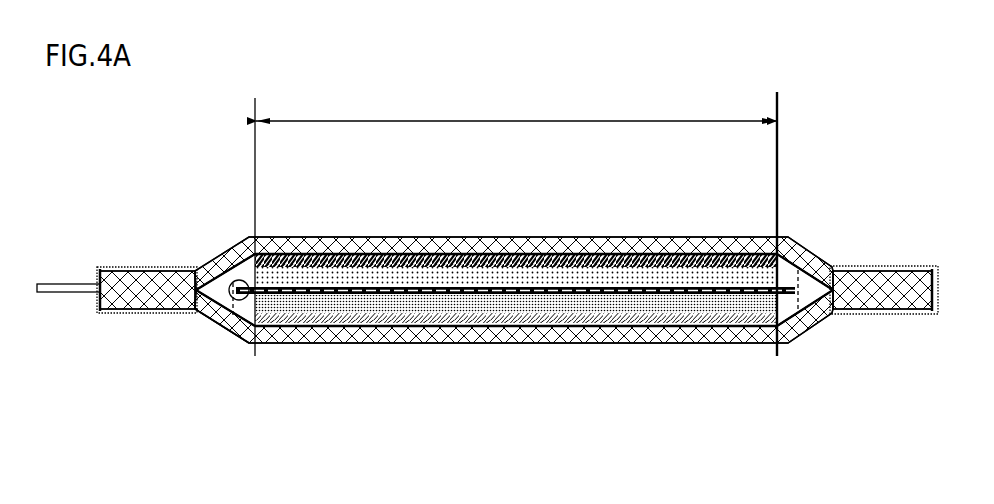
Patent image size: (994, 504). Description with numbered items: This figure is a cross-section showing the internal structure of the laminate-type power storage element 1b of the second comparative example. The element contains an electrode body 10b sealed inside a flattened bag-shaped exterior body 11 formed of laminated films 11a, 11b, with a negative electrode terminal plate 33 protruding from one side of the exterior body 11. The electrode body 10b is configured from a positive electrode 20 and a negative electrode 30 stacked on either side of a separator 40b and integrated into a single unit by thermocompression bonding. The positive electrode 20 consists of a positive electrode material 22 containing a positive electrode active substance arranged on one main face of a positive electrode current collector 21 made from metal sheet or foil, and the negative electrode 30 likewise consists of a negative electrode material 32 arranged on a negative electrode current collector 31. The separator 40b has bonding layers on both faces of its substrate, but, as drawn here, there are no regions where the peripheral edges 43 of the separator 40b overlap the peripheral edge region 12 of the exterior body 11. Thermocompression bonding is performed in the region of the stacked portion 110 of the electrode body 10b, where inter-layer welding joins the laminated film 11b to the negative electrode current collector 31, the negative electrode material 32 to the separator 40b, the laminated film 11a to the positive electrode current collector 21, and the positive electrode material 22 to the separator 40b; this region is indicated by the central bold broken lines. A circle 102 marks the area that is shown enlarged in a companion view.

The laminate-type power storage element 1b is at (740, 176).
The electrode body 10b is at (273, 345).
The exterior body 11 is at (514, 293).
The laminated film 11a is at (607, 342).
The laminated film 11b is at (605, 242).
The peripheral edge region 12 is at (140, 311).
The positive electrode 20 is at (524, 390).
The positive electrode current collector 21 is at (707, 322).
The positive electrode material 22 is at (733, 305).
The negative electrode 30 is at (516, 205).
The negative electrode current collector 31 is at (347, 262).
The negative electrode material 32 is at (383, 277).
The negative electrode terminal plate 33 is at (88, 285).
The separator 40b is at (792, 296).
The peripheral edges 43 is at (785, 276).
The circle 102 is at (237, 277).
The stacked portion 110 is at (588, 120).